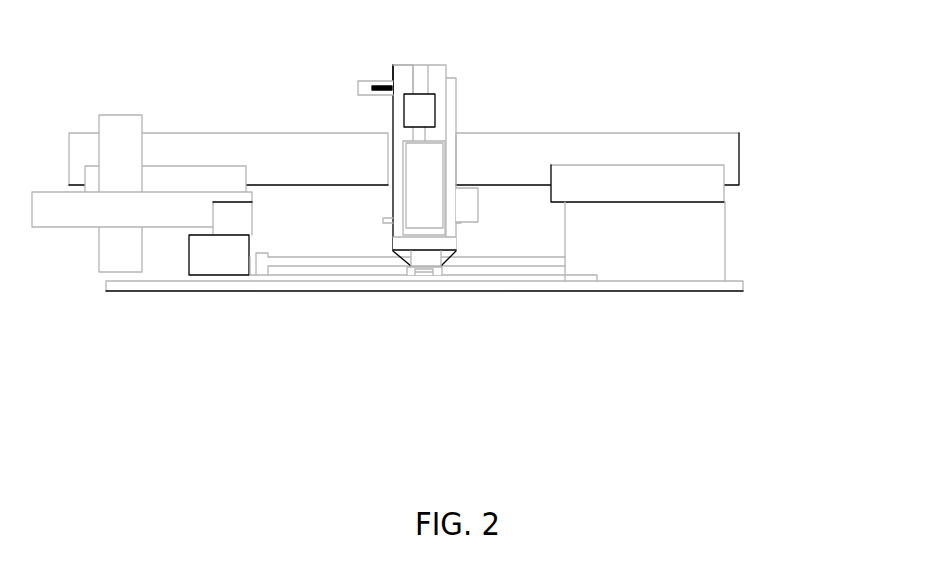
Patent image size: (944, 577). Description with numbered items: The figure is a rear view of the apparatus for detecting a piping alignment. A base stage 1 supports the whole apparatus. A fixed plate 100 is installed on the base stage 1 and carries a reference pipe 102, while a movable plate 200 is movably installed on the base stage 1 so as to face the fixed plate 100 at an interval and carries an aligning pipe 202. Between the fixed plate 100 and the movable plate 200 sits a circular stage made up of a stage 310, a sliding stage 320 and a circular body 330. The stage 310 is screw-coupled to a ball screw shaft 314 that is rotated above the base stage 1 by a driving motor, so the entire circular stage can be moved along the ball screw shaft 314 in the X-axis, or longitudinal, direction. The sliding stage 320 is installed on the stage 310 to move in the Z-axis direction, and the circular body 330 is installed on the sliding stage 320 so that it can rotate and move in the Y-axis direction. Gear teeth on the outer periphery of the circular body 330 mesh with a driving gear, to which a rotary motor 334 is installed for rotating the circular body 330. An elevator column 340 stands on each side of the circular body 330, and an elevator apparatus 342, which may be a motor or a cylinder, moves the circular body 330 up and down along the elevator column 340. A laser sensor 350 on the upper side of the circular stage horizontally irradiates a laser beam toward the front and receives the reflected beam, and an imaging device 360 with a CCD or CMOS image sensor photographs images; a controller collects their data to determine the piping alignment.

The base stage 1 is at (185, 288).
The fixed plate 100 is at (680, 225).
The reference pipe 102 is at (693, 145).
The movable plate 200 is at (78, 249).
The aligning pipe 202 is at (242, 146).
The stage 310 is at (442, 253).
The ball screw shaft 314 is at (347, 264).
The sliding stage 320 is at (413, 242).
The circular body 330 is at (420, 89).
The rotary motor 334 is at (470, 205).
The elevator column 340 is at (405, 69).
The elevator apparatus 342 is at (420, 112).
The laser sensor 350 is at (386, 87).
The imaging device 360 is at (358, 88).